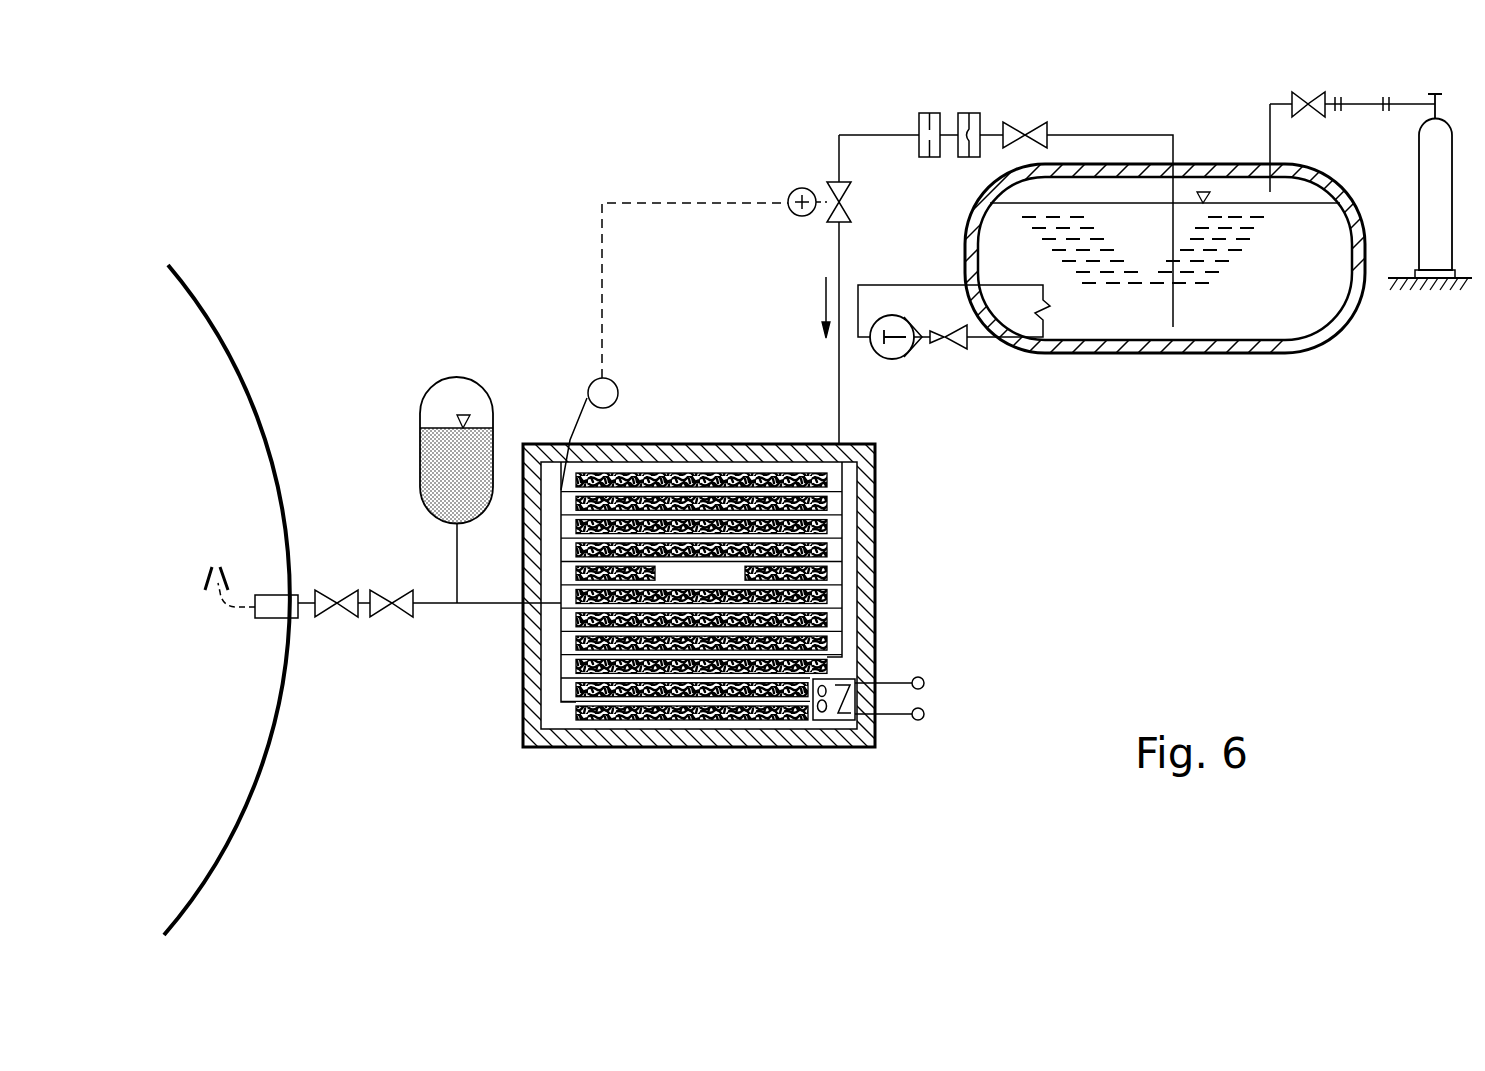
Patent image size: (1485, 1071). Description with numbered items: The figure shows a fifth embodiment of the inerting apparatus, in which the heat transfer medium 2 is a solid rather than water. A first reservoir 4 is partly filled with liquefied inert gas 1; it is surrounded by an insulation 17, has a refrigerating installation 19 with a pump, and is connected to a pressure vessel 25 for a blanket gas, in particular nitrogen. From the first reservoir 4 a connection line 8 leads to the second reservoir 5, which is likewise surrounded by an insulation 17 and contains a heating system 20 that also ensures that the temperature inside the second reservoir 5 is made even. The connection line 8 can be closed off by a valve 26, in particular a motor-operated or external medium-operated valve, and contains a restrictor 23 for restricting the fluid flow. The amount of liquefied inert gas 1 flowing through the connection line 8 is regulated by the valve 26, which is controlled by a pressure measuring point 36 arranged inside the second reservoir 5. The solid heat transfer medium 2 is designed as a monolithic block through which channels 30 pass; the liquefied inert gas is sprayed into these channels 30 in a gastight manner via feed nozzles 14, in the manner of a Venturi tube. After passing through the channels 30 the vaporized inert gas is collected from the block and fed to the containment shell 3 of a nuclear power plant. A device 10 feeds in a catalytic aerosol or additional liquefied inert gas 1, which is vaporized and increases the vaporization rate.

The liquefied inert gas 1 is at (1227, 297).
The heat transfer medium 2 is at (758, 643).
The containment shell 3 is at (215, 327).
The first reservoir 4 is at (1097, 328).
The second reservoir 5 is at (772, 670).
The connection line 8 is at (838, 252).
The device for feeding aerosol 10 is at (495, 443).
The feed nozzles 14 is at (826, 530).
The insulation 17 is at (1320, 349).
The refrigerating installation 19 is at (905, 355).
The heating system 20 is at (898, 720).
The restrictor 23 is at (933, 113).
The pressure vessel 25 is at (1418, 163).
The valve 26 is at (847, 195).
The channels 30 is at (621, 677).
The pressure measuring point 36 is at (619, 392).